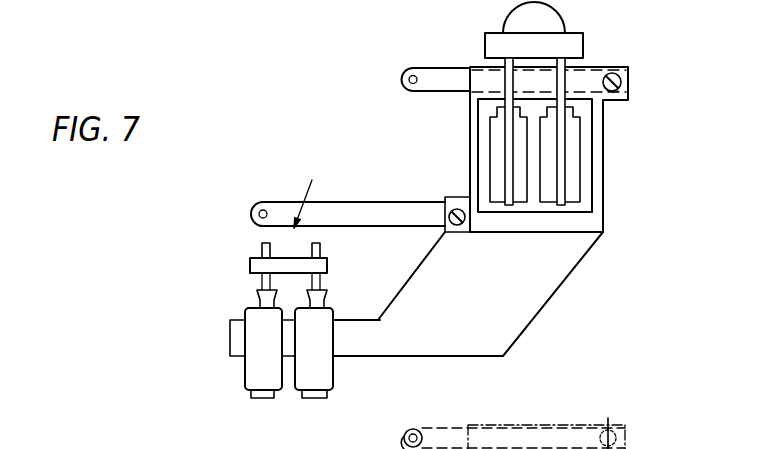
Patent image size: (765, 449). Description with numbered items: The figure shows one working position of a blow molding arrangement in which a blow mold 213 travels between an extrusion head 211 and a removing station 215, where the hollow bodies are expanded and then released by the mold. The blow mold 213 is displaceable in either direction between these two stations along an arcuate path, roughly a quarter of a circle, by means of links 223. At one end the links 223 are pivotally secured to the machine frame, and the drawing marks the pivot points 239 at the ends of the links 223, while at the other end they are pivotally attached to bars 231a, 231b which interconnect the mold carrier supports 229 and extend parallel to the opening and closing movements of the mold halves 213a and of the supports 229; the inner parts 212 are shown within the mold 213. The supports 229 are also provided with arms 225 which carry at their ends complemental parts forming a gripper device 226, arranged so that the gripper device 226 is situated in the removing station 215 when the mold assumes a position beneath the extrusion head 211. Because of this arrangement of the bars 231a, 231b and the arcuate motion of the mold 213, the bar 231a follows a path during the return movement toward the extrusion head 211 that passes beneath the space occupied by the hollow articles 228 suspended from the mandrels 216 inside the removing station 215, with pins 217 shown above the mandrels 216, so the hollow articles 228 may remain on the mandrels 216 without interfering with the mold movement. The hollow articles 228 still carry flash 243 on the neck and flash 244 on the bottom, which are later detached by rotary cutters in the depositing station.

The extrusion head 211 is at (560, 28).
The contact blocks 212 is at (562, 128).
The blow mold 213 is at (587, 170).
The mold halves 213a is at (586, 192).
The removing station 215 is at (302, 192).
The mandrels 216 is at (313, 283).
The pins 217 is at (262, 250).
The links 223 is at (446, 74).
The arms 225 is at (452, 356).
The gripper device 226 is at (235, 333).
The hollow articles 228 is at (333, 380).
The mold carrier supports 229 is at (595, 220).
The bar 231a is at (457, 228).
The bar 231b is at (615, 72).
The pivot holes 239 is at (413, 67).
The flash 243 is at (258, 293).
The flash 244 is at (260, 400).